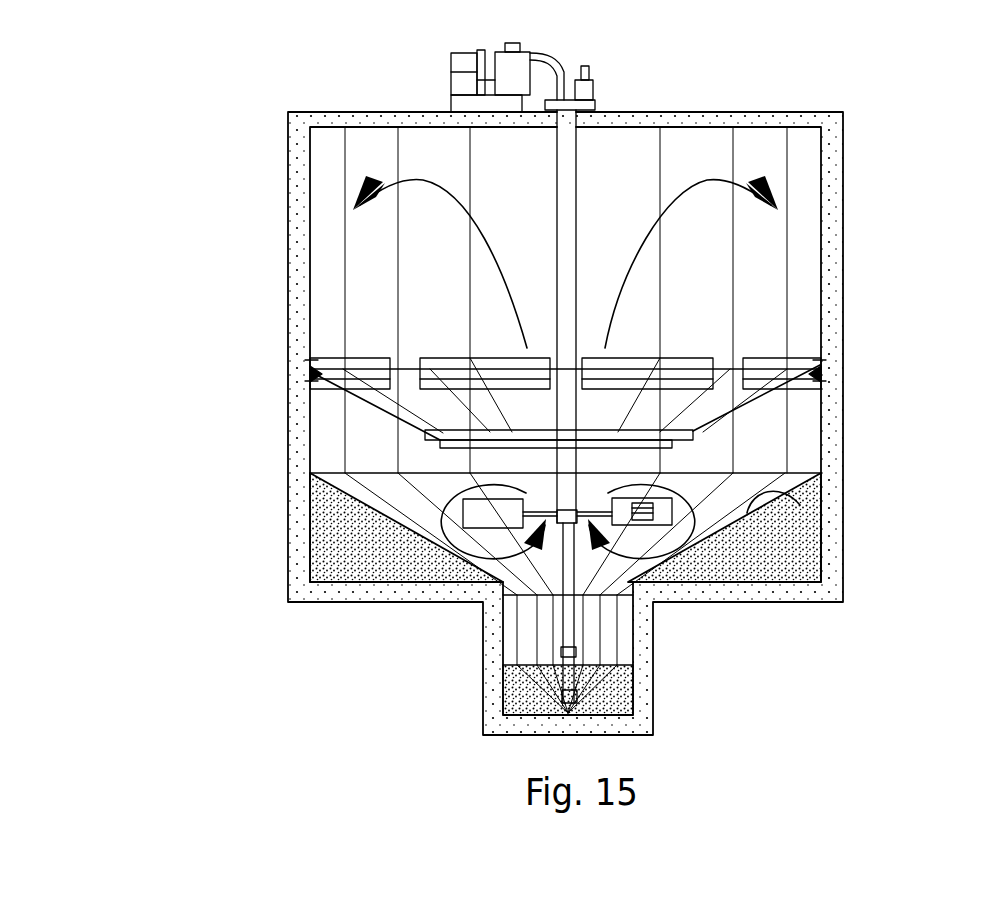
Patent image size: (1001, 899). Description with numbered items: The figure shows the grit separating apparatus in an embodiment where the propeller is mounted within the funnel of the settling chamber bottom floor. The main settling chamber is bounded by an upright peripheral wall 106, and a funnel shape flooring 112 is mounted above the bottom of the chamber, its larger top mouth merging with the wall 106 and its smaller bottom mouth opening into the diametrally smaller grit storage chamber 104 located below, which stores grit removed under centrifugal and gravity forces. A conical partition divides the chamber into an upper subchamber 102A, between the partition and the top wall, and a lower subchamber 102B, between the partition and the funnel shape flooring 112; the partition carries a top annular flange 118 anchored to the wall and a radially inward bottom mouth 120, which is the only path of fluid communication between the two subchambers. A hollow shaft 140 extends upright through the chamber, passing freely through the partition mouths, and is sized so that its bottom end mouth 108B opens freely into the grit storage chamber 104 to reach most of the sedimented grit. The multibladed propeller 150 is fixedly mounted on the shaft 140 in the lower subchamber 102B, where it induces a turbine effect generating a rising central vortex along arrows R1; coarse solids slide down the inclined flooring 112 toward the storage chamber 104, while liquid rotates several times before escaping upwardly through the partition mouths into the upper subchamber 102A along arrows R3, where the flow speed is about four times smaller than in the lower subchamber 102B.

The upright peripheral wall 106 is at (833, 177).
The hollow shaft 140 is at (557, 178).
The multibladed propeller 150 is at (540, 505).
The upper subchamber 102A is at (710, 330).
The lower subchamber 102B is at (392, 452).
The top annular flange 118 is at (735, 358).
The bottom mouth 120 is at (673, 448).
The funnel shape flooring 112 is at (820, 490).
The grit storage chamber 104 is at (618, 648).
The bottom end mouth 108B is at (575, 686).
The rising central vortex arrows R1 is at (438, 540).
The upper subchamber flow arrows R3 is at (420, 177).